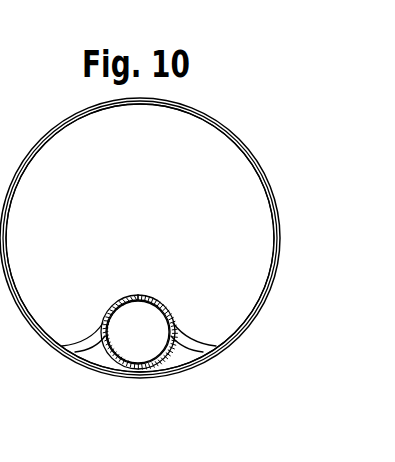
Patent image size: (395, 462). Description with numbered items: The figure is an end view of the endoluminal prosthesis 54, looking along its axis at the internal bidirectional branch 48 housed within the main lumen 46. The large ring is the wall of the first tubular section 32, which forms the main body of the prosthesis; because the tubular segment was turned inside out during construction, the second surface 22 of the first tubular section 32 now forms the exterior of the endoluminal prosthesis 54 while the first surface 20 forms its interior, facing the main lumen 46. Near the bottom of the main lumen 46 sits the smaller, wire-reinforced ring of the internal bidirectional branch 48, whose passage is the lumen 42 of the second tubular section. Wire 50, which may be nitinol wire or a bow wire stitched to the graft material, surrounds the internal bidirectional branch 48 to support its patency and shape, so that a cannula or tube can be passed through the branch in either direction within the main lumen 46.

The first surface 20 is at (105, 108).
The second surface 22 is at (220, 120).
The first tubular section 32 is at (248, 208).
The main lumen 46 is at (215, 245).
The internal bidirectional branch 48 is at (127, 298).
The wire 50 is at (138, 295).
The lumen 42 is at (148, 346).
The endoluminal prosthesis 54 is at (161, 243).